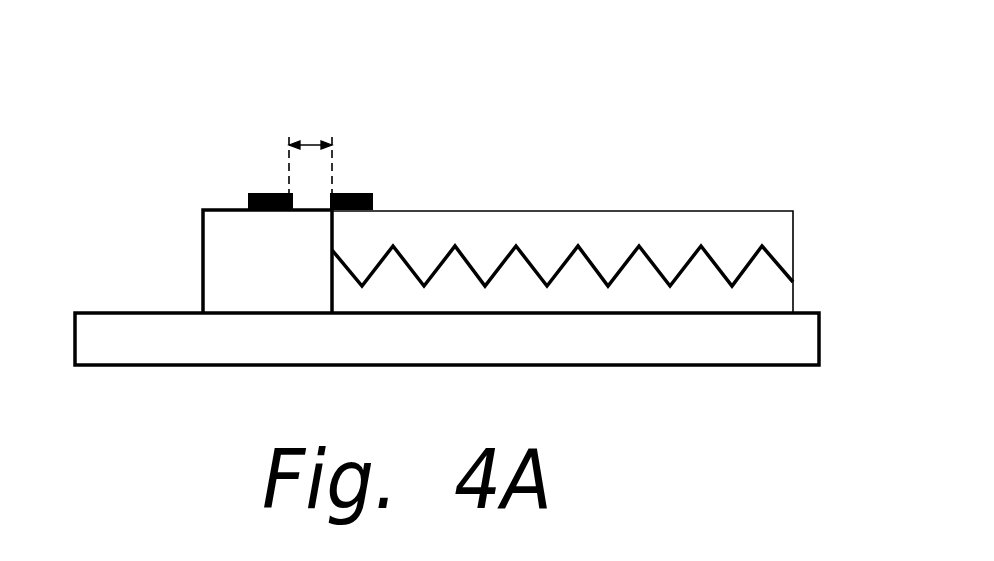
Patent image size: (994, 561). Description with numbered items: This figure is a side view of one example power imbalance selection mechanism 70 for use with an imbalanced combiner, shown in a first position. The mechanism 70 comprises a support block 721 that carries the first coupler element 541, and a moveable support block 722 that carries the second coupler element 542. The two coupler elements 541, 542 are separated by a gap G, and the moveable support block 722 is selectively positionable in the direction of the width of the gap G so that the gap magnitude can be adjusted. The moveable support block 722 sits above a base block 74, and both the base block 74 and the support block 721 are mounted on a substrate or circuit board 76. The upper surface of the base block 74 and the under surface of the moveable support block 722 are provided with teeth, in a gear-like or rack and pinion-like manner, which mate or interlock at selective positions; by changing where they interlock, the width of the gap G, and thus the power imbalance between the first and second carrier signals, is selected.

The power imbalance selection mechanism 70 is at (352, 65).
The substrate or circuit board 76 is at (75, 338).
The support block 721 is at (203, 263).
The moveable support block 722 is at (793, 235).
The base block 74 is at (768, 300).
The first coupler element 541 is at (248, 205).
The second coupler element 542 is at (375, 206).
The gap G is at (315, 142).